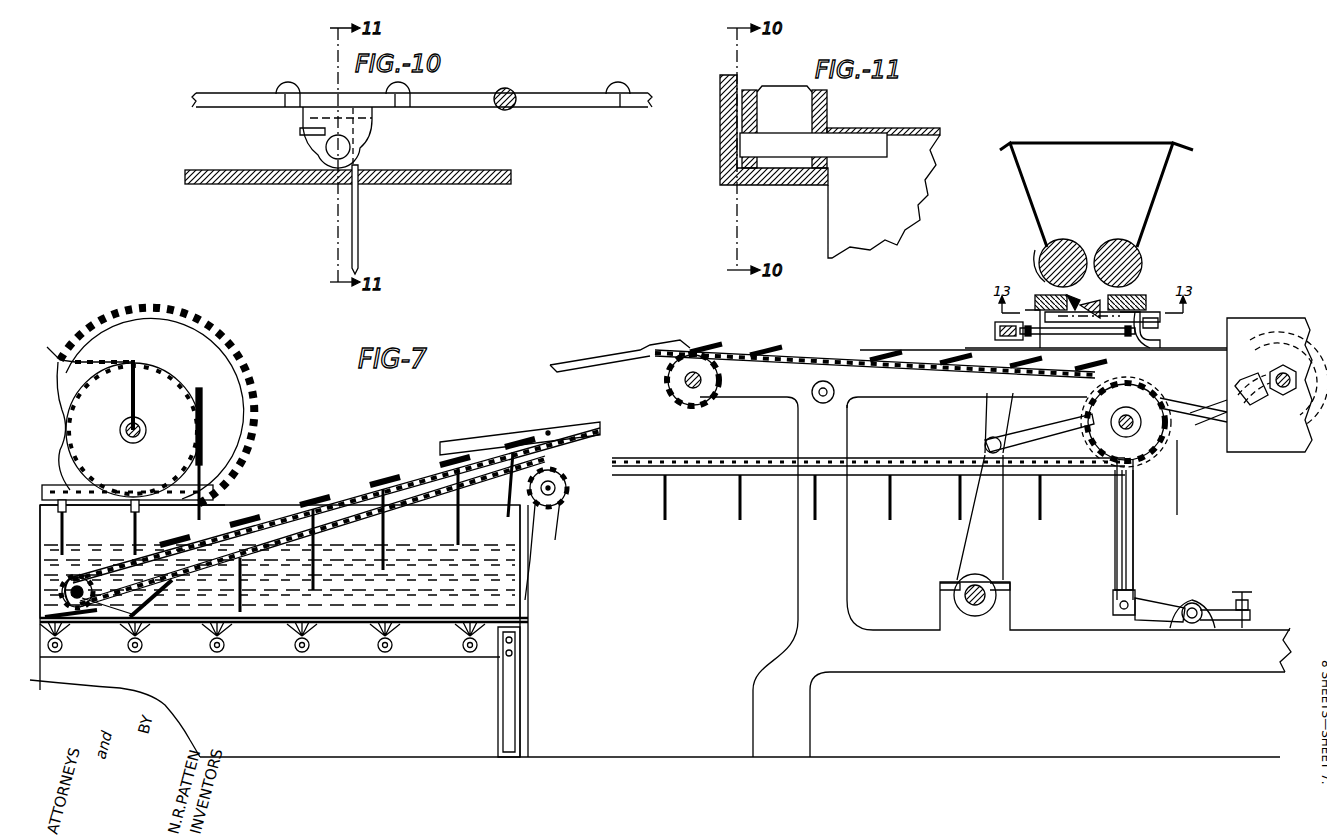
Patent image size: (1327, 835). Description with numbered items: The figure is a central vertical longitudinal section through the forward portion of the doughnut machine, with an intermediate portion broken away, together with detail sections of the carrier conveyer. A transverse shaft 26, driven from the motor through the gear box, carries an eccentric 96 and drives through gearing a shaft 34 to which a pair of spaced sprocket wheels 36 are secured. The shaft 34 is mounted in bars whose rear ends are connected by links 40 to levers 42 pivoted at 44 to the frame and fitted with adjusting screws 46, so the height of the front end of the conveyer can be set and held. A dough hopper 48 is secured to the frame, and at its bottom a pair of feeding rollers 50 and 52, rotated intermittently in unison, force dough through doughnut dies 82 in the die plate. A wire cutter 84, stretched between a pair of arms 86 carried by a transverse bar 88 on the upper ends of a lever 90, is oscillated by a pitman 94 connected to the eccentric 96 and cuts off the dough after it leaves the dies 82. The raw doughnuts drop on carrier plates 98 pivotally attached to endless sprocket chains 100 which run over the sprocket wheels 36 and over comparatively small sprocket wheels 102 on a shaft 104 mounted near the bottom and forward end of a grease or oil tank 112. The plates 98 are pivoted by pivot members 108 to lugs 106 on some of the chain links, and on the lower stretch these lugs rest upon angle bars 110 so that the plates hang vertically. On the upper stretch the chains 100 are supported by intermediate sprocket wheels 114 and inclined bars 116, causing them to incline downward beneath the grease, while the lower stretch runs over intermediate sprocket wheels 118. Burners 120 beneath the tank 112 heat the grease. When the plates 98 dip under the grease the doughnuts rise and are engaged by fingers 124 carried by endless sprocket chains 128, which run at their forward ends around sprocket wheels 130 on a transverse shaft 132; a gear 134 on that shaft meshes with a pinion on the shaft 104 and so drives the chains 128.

In FIG. 7, the transverse shaft 26 is at (1278, 366).
In FIG. 7, the shaft 34 is at (1132, 430).
In FIG. 7, the sprocket wheels 36 is at (1105, 445).
In FIG. 7, the links 40 is at (1115, 550).
In FIG. 7, the levers 42 is at (1160, 602).
In FIG. 7, the pivot 44 is at (1200, 605).
In FIG. 7, the adjusting screws 46 is at (1250, 618).
In FIG. 7, the dough hopper 48 is at (1150, 190).
In FIG. 7, the feeding roller 50 is at (1040, 253).
In FIG. 7, the feeding roller 52 is at (1142, 252).
In FIG. 7, the doughnut dies 82 is at (1130, 302).
In FIG. 7, the wire cutter 84 is at (1135, 338).
In FIG. 7, the arms 86 is at (1082, 330).
In FIG. 7, the transverse bar 88 is at (995, 328).
In FIG. 7, the lever 90 is at (963, 540).
In FIG. 7, the pitman 94 is at (1045, 432).
In FIG. 7, the eccentric 96 is at (1302, 318).
In FIG. 10, the carrier plates 98 is at (358, 222).
In FIG. 11, the carrier plates 98 is at (880, 242).
In FIG. 10, the sprocket chains 100 is at (552, 93).
In FIG. 11, the sprocket chains 100 is at (782, 92).
In FIG. 7, the sprocket wheels 102 is at (140, 622).
In FIG. 7, the shaft 104 is at (80, 606).
In FIG. 10, the lugs 106 is at (360, 125).
In FIG. 11, the lugs 106 is at (828, 114).
In FIG. 10, the pivot members 108 is at (326, 147).
In FIG. 11, the pivot members 108 is at (860, 145).
In FIG. 10, the angle bars 110 is at (470, 184).
In FIG. 11, the angle bars 110 is at (737, 183).
In FIG. 7, the angle bars 110 is at (776, 478).
In FIG. 7, the grease or oil tank 112 is at (522, 585).
In FIG. 7, the intermediate sprocket wheels 114 is at (680, 392).
In FIG. 7, the inclined bars 116 is at (508, 438).
In FIG. 7, the intermediate sprocket wheels 118 is at (568, 500).
In FIG. 7, the burners 120 is at (372, 652).
In FIG. 7, the fingers 124 is at (135, 535).
In FIG. 7, the sprocket chains 128 is at (90, 357).
In FIG. 7, the sprocket wheels 130 is at (160, 385).
In FIG. 7, the transverse shaft 132 is at (142, 422).
In FIG. 7, the gear 134 is at (140, 310).